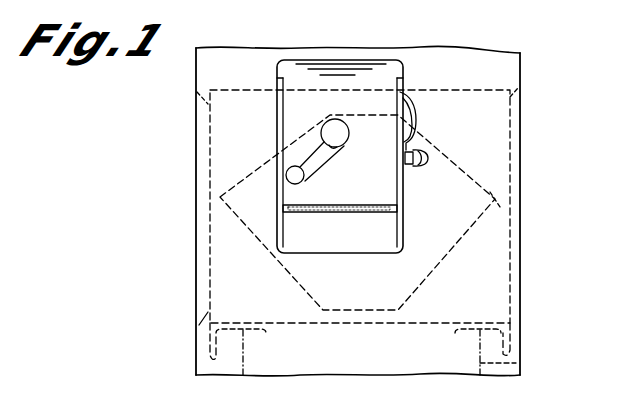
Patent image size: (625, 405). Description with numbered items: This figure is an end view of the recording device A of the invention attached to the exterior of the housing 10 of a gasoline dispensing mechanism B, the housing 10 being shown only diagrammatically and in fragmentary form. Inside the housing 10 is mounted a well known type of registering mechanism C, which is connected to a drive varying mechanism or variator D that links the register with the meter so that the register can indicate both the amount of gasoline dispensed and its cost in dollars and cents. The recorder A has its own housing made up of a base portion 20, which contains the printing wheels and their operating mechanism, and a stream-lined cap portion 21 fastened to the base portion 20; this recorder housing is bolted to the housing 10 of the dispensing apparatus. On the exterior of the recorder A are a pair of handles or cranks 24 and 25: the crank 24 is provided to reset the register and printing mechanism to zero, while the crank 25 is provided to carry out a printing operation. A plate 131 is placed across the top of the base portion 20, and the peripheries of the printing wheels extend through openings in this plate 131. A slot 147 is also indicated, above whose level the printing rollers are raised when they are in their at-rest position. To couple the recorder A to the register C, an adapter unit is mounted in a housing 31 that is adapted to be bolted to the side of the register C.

The housing 10 is at (522, 55).
The base portion 20 is at (404, 233).
The cap portion 21 is at (297, 62).
The handle or crank 24 is at (288, 180).
The crank 25 is at (414, 136).
The housing 31 is at (488, 211).
The plate 131 is at (398, 209).
The slot 147 is at (290, 208).
The recording device A is at (345, 136).
The gasoline dispensing mechanism B is at (522, 105).
The registering mechanism C is at (449, 91).
The drive varying mechanism or variator D is at (486, 363).